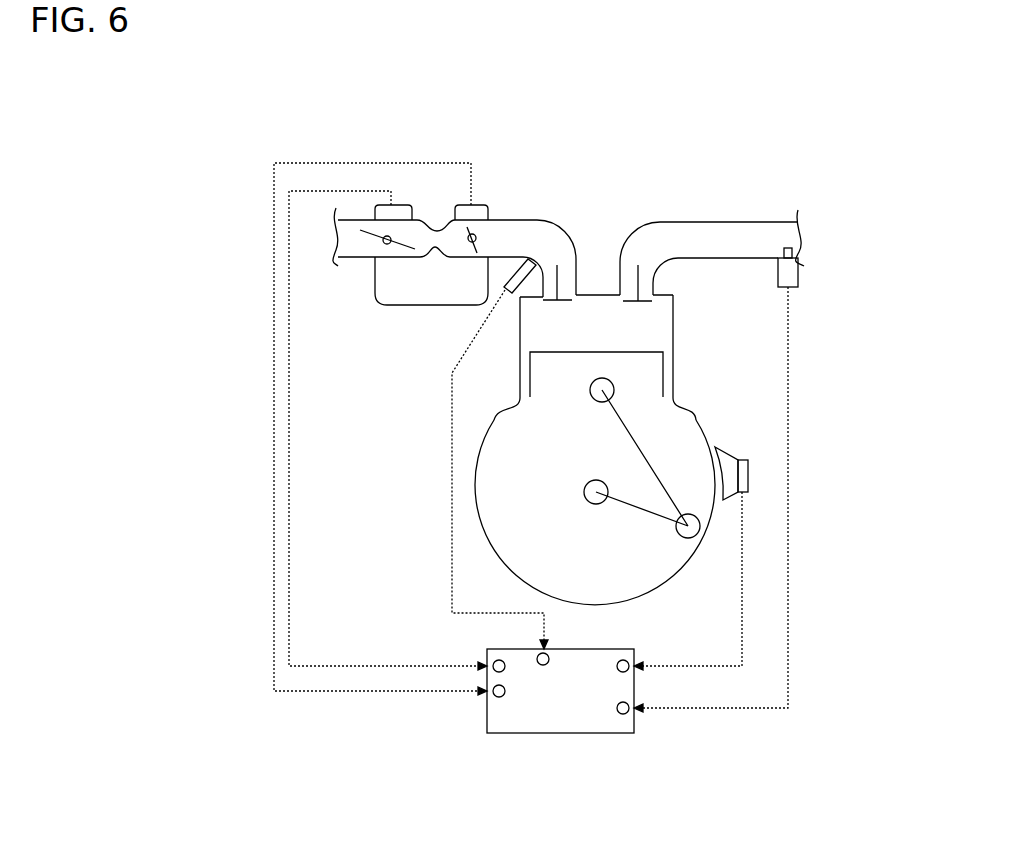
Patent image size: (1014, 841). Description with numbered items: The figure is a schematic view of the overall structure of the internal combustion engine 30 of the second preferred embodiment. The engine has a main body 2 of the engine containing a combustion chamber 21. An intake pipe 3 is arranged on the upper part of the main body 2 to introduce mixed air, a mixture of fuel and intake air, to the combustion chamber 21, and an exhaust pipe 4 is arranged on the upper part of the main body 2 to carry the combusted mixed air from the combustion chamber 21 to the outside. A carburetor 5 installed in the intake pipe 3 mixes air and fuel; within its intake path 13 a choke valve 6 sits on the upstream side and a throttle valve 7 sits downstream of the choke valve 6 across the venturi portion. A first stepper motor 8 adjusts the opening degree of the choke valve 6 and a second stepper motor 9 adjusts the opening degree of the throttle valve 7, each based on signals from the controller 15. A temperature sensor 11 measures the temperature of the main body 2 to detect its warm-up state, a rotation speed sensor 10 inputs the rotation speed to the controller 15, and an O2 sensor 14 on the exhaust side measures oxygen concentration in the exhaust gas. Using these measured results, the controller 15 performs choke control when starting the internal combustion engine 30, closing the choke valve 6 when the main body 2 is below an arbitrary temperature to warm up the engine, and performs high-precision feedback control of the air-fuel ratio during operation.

The main body of the engine 2 is at (673, 360).
The intake pipe 3 is at (528, 218).
The exhaust pipe 4 is at (782, 222).
The carburetor 5 is at (350, 279).
The choke valve 6 is at (385, 236).
The throttle valve 7 is at (468, 234).
The first stepper motor 8 is at (402, 205).
The second stepper motor 9 is at (450, 220).
The rotation speed sensor 10 is at (718, 448).
The temperature sensor 11 is at (505, 288).
The intake path 13 is at (518, 240).
The O2 sensor 14 is at (798, 268).
The controller 15 is at (604, 733).
The combustion chamber 21 is at (603, 315).
The internal combustion engine 30 is at (735, 160).